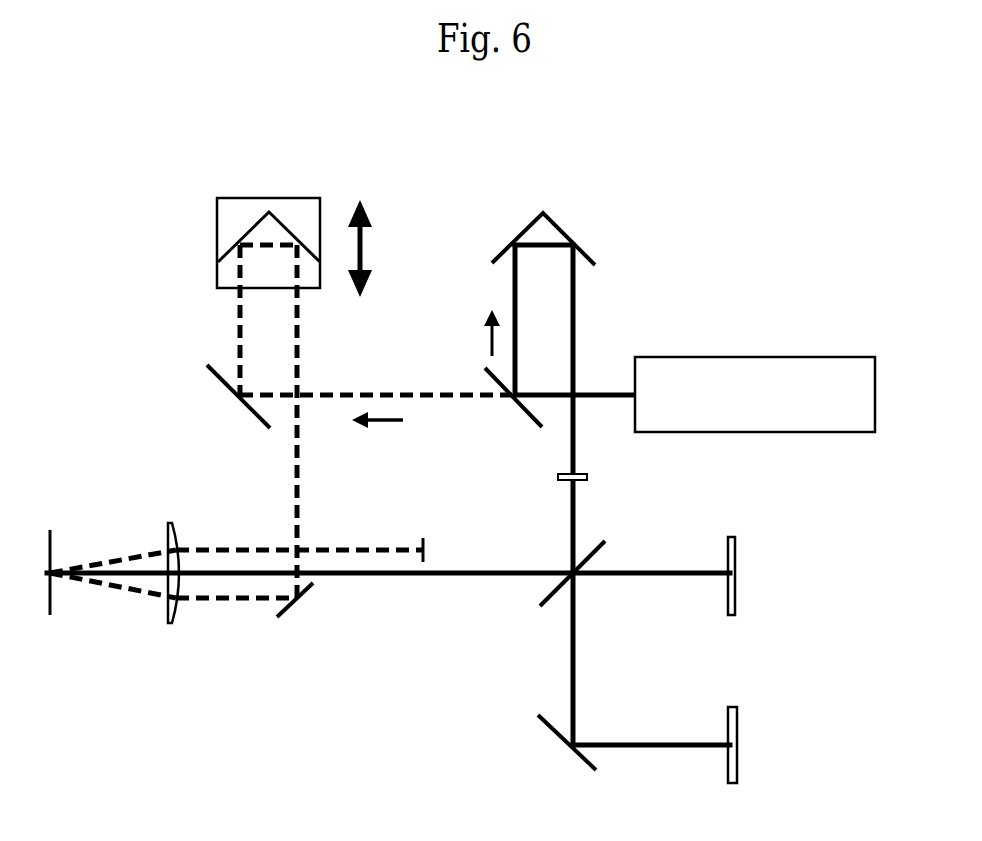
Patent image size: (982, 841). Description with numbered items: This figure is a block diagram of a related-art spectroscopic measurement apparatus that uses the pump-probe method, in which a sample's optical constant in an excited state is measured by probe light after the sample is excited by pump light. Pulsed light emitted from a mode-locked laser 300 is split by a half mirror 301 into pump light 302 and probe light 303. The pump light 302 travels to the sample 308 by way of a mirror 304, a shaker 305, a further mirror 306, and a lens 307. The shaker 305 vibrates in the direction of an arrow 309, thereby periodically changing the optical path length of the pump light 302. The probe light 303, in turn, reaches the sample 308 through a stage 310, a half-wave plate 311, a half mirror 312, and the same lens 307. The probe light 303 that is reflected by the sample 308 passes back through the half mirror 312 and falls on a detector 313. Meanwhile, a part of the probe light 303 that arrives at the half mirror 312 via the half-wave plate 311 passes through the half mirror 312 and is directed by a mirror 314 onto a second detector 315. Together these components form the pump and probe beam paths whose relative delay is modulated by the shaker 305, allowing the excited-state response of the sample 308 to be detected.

The mode-locked laser 300 is at (710, 357).
The half mirror 301 is at (532, 422).
The pump light 302 is at (338, 390).
The probe light 303 is at (513, 298).
The mirror 304 is at (255, 417).
The shaker 305 is at (218, 243).
The mirror 306 is at (283, 612).
The lens 307 is at (173, 620).
The sample 308 is at (50, 545).
The arrow 309 is at (365, 238).
The stage 310 is at (558, 227).
The half-wave plate 311 is at (583, 478).
The half mirror 312 is at (538, 608).
The detector 313 is at (735, 547).
The mirror 314 is at (547, 733).
The detector 315 is at (737, 722).